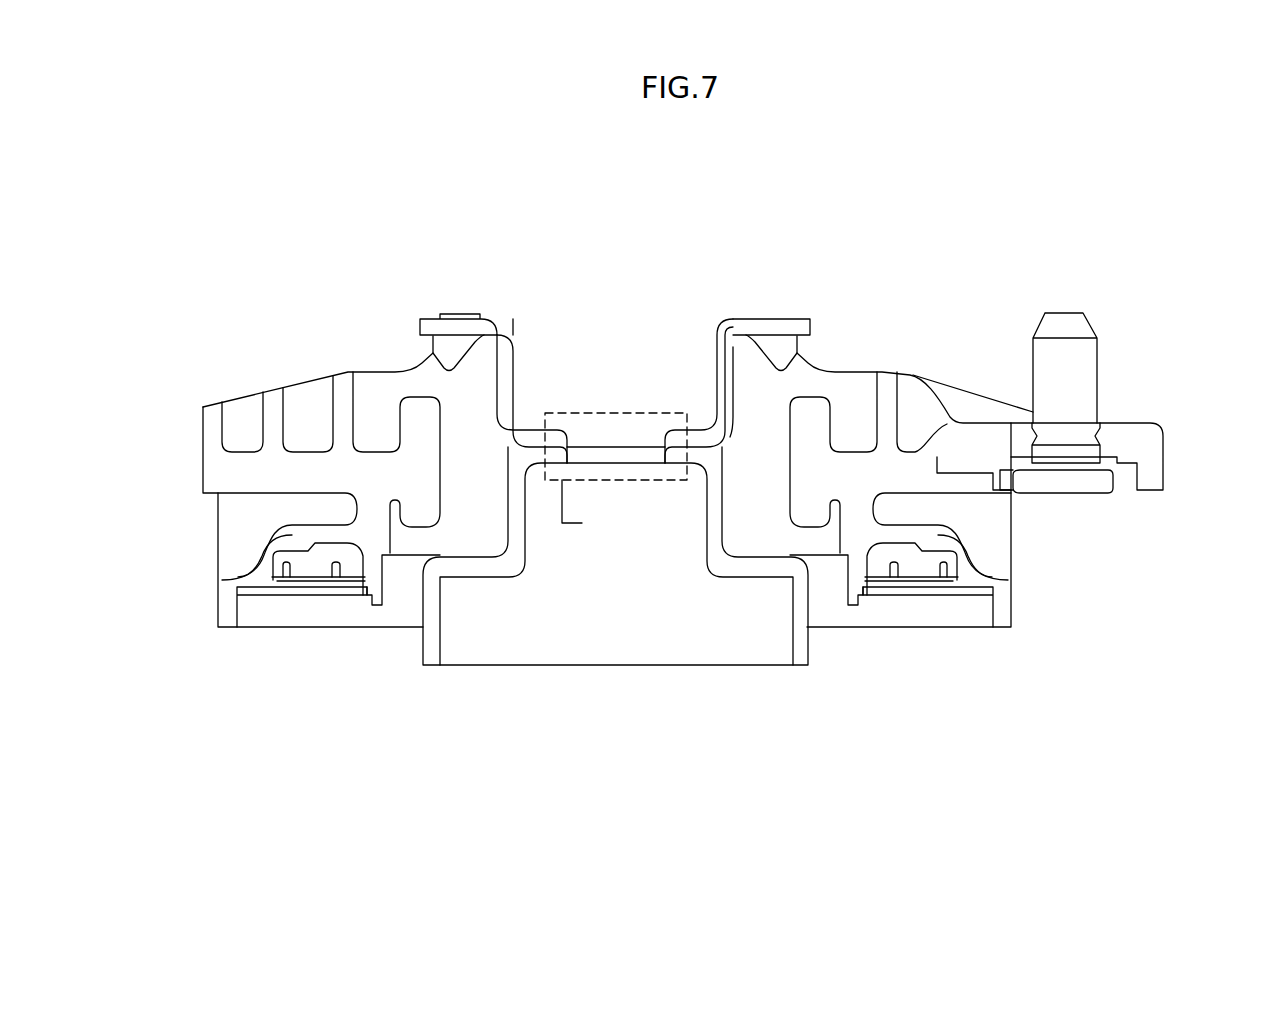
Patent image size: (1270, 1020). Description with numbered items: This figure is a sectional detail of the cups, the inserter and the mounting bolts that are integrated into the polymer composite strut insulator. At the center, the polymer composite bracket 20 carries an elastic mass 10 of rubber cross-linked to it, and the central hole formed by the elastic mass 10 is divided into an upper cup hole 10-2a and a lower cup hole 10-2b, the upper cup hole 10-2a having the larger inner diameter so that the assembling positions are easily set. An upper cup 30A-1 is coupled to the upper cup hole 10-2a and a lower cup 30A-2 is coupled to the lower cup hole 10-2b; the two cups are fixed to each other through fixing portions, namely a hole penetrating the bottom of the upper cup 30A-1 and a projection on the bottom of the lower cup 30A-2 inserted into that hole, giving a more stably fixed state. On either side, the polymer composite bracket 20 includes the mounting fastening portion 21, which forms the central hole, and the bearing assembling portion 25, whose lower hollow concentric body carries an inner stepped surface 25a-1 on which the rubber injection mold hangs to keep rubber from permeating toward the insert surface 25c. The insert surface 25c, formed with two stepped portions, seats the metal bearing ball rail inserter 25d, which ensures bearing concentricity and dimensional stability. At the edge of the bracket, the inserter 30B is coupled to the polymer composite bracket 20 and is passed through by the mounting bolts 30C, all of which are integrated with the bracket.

The elastic mass 10 is at (940, 486).
The upper cup hole 10-2a is at (735, 392).
The lower cup hole 10-2b is at (750, 525).
The polymer composite bracket 20 is at (237, 726).
The mounting fastening portion 21 is at (320, 472).
The bearing assembling portion 25 is at (307, 633).
The inner stepped surface 25a-1 is at (848, 555).
The insert surface 25c is at (318, 569).
The bearing ball rail inserter 25d is at (302, 607).
The upper cup 30A-1 is at (618, 340).
The lower cup 30A-2 is at (545, 632).
The inserter 30B is at (1108, 448).
The mounting bolts 30C is at (1065, 360).